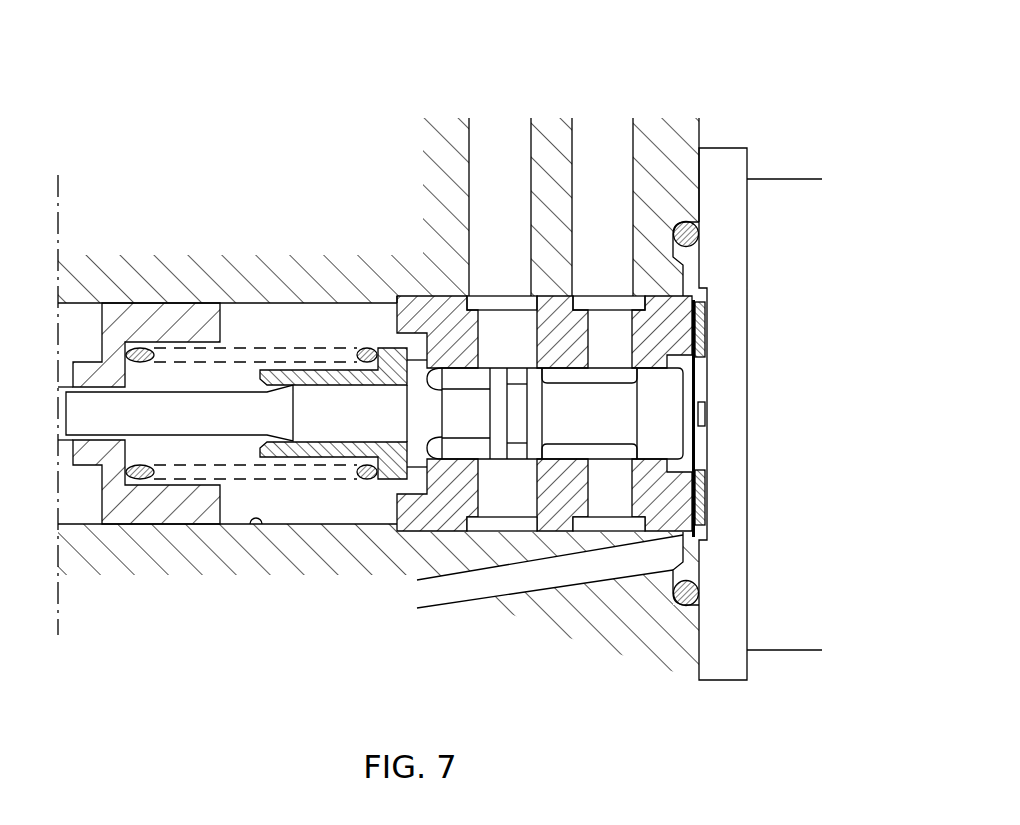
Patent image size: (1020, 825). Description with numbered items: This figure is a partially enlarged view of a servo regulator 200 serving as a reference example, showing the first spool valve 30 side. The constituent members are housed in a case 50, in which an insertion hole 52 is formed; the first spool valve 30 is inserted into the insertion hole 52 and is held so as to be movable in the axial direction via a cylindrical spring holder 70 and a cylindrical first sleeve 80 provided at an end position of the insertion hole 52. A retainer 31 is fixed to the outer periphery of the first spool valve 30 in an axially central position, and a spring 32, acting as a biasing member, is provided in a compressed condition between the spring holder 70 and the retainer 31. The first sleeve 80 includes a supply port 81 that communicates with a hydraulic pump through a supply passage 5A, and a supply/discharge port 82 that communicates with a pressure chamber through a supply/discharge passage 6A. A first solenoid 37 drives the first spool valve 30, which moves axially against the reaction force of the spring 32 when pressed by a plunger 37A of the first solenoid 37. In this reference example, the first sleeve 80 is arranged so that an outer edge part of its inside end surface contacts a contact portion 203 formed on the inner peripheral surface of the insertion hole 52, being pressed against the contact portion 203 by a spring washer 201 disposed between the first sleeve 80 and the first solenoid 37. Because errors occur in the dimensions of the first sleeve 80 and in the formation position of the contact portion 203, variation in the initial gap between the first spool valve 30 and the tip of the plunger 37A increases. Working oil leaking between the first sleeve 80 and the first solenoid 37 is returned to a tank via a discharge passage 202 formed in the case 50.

The servo regulator 200 is at (722, 66).
The supply/discharge passage 6A is at (498, 135).
The supply passage 5A is at (605, 135).
The first solenoid 37 is at (789, 195).
The plunger 37A is at (703, 413).
The first spool valve 30 is at (78, 410).
The spring holder 70 is at (135, 318).
The spring 32 is at (228, 355).
The retainer 31 is at (315, 372).
The first sleeve 80 is at (400, 306).
The case 50 is at (673, 280).
The spring washer 201 is at (707, 495).
The insertion hole 52 is at (258, 526).
The contact portion 203 is at (412, 527).
The discharge passage 202 is at (467, 588).
The supply/discharge port 82 is at (517, 499).
The supply port 81 is at (607, 499).